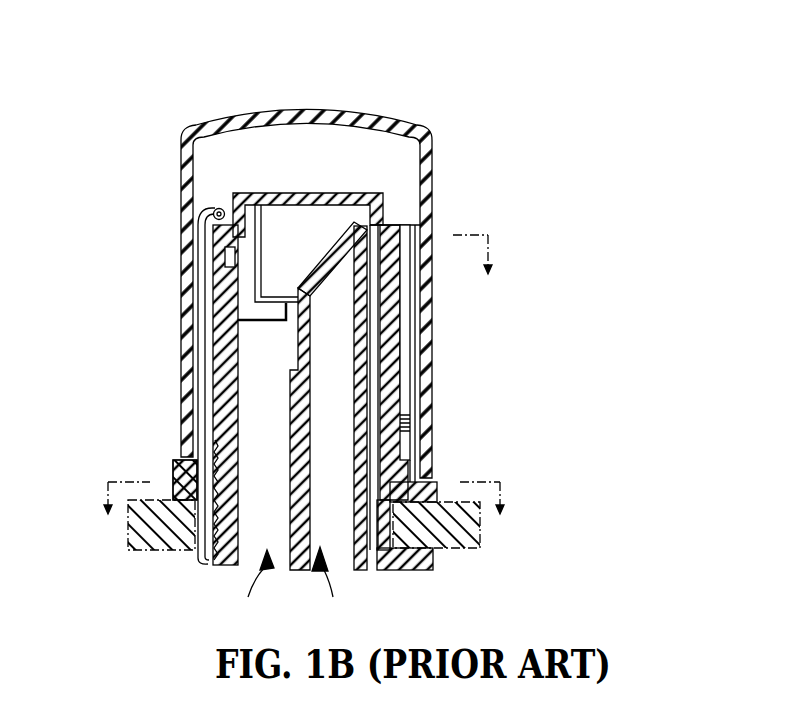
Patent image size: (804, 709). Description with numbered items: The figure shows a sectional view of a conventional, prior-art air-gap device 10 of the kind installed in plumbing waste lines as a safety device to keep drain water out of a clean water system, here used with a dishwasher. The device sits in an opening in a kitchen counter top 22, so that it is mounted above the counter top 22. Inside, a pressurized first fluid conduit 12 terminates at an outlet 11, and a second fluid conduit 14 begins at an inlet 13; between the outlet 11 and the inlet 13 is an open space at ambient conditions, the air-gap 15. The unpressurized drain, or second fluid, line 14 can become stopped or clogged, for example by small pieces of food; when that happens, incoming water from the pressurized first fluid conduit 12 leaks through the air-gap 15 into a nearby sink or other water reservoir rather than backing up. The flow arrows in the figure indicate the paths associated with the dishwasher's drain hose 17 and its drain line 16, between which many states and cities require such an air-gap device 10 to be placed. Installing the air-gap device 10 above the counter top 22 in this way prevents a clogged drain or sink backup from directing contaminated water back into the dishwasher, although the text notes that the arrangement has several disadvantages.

The air-gap device 10 is at (353, 341).
The outlet 11 is at (326, 260).
The first fluid conduit 12 is at (353, 290).
The inlet 13 is at (256, 306).
The second fluid conduit 14 is at (258, 350).
The air-gap 15 is at (283, 216).
The drain line 16 is at (248, 592).
The drain hose 17 is at (347, 586).
The kitchen counter top 22 is at (480, 530).